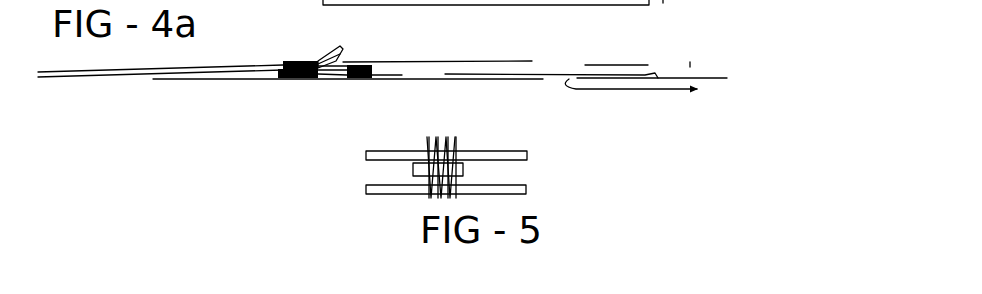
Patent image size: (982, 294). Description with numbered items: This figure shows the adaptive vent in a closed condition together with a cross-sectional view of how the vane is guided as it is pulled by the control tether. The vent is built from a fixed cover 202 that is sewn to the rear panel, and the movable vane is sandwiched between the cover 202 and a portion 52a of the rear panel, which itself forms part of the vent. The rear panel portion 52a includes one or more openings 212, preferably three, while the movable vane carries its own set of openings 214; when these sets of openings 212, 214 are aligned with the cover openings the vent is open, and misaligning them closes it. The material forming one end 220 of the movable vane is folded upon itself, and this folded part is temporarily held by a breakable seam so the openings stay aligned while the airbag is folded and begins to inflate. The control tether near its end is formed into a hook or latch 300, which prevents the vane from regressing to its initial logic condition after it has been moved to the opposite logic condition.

In FIG. 4a, the portion of the rear panel 52a is at (162, 82).
In FIG. 5, the portion of the rear panel 52a is at (405, 192).
In FIG. 4a, the hook or latch 300 is at (317, 55).
In FIG. 4a, the openings 214 is at (412, 75).
In FIG. 4a, the fixed cover 202 is at (477, 62).
In FIG. 4a, the openings 212 is at (697, 90).
In FIG. 5, the end of the movable vane 220 is at (413, 170).